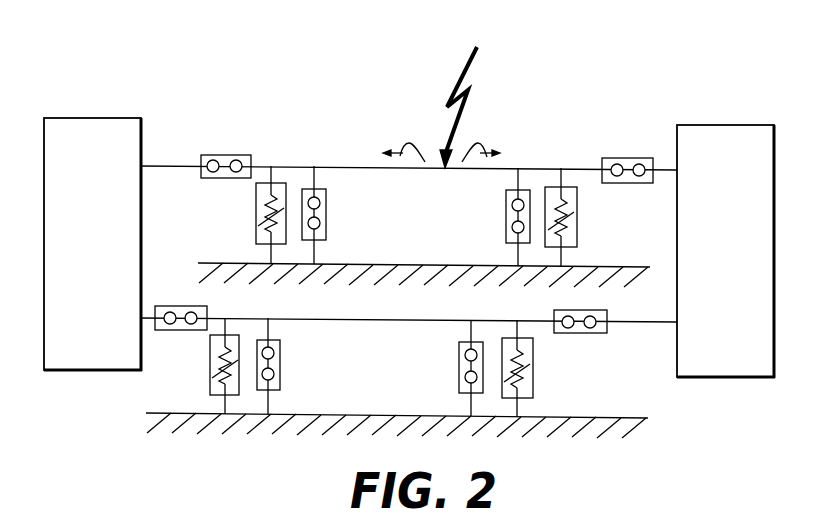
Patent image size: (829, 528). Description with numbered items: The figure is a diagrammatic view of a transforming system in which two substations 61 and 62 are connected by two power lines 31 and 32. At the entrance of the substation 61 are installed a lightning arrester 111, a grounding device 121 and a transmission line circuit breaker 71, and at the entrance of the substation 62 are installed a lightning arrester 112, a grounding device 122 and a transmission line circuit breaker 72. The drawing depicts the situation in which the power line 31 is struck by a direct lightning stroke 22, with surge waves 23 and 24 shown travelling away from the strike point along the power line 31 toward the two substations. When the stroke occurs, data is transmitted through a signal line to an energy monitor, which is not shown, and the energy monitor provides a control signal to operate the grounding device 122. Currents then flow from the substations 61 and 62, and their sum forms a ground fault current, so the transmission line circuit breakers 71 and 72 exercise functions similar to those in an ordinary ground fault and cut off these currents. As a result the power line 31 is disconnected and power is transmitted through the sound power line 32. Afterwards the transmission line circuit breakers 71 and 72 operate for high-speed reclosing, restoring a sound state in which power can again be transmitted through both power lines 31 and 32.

The direct lightning stroke 22 is at (466, 94).
The surge wave propagating left 23 is at (405, 146).
The surge wave propagating right 24 is at (478, 145).
The power line 31 is at (508, 168).
The power line 32 is at (356, 322).
The substation 61 is at (115, 118).
The substation 62 is at (728, 125).
The transmission line circuit breaker 71 is at (237, 155).
The transmission line circuit breaker 72 is at (630, 158).
The lightning arrester 111 is at (256, 222).
The lightning arrester 112 is at (577, 232).
The grounding device 121 is at (326, 220).
The grounding device 122 is at (506, 224).